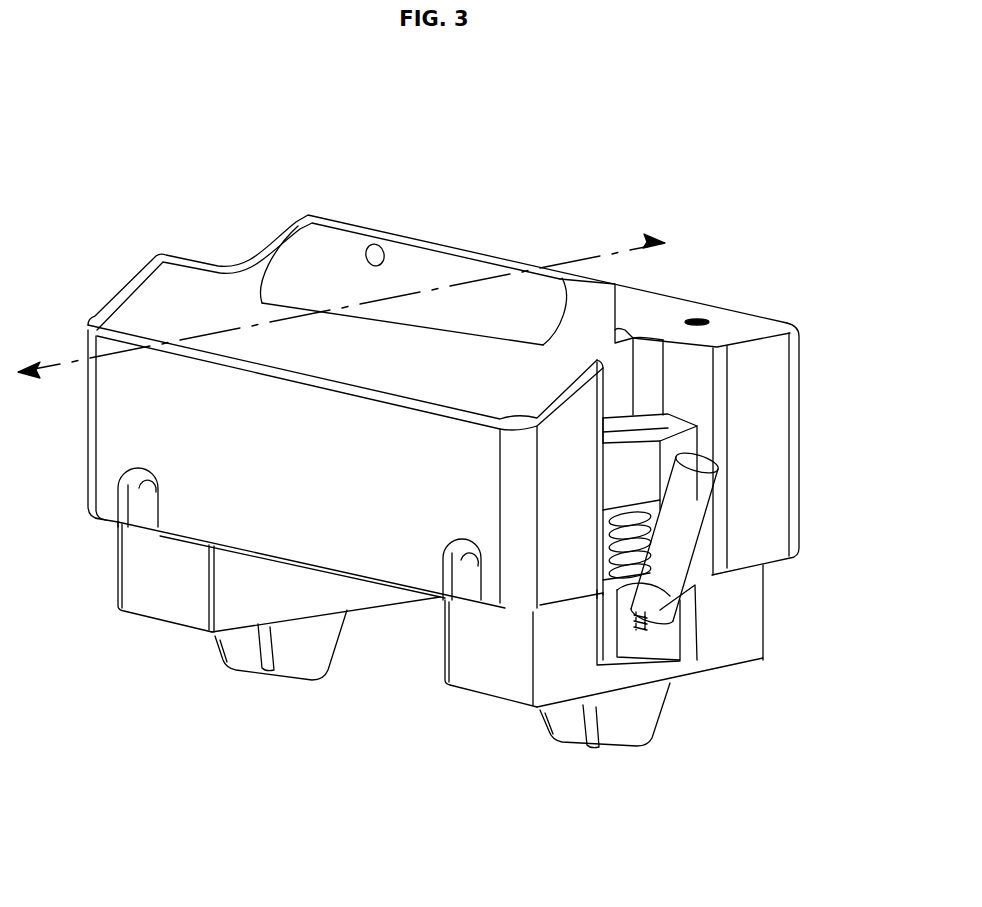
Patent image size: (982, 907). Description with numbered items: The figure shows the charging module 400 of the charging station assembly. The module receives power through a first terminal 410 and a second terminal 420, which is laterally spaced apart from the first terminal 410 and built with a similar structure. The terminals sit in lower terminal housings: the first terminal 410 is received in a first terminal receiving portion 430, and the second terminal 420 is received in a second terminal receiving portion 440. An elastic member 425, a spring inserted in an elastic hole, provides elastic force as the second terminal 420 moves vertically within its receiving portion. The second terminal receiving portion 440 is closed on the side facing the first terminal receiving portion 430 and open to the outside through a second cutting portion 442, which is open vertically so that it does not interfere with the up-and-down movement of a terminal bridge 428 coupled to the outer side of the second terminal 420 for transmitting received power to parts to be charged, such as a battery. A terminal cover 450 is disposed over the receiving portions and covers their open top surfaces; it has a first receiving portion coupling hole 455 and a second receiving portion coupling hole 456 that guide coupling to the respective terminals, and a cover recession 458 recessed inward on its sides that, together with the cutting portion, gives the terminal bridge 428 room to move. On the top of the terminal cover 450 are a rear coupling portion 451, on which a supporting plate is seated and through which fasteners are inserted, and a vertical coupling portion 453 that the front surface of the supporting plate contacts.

The charging module 400 is at (122, 206).
The first terminal 410 is at (300, 655).
The second terminal 420 is at (626, 736).
The elastic member 425 is at (650, 525).
The terminal bridge 428 is at (707, 486).
The first terminal receiving portion 430 is at (163, 605).
The second terminal receiving portion 440 is at (490, 680).
The second cutting portion 442 is at (688, 628).
The terminal cover 450 is at (282, 246).
The rear coupling portion 451 is at (750, 323).
The vertical coupling portion 453 is at (410, 243).
The first receiving portion coupling hole 455 is at (145, 492).
The second receiving portion coupling hole 456 is at (470, 567).
The cover recession 458 is at (693, 378).